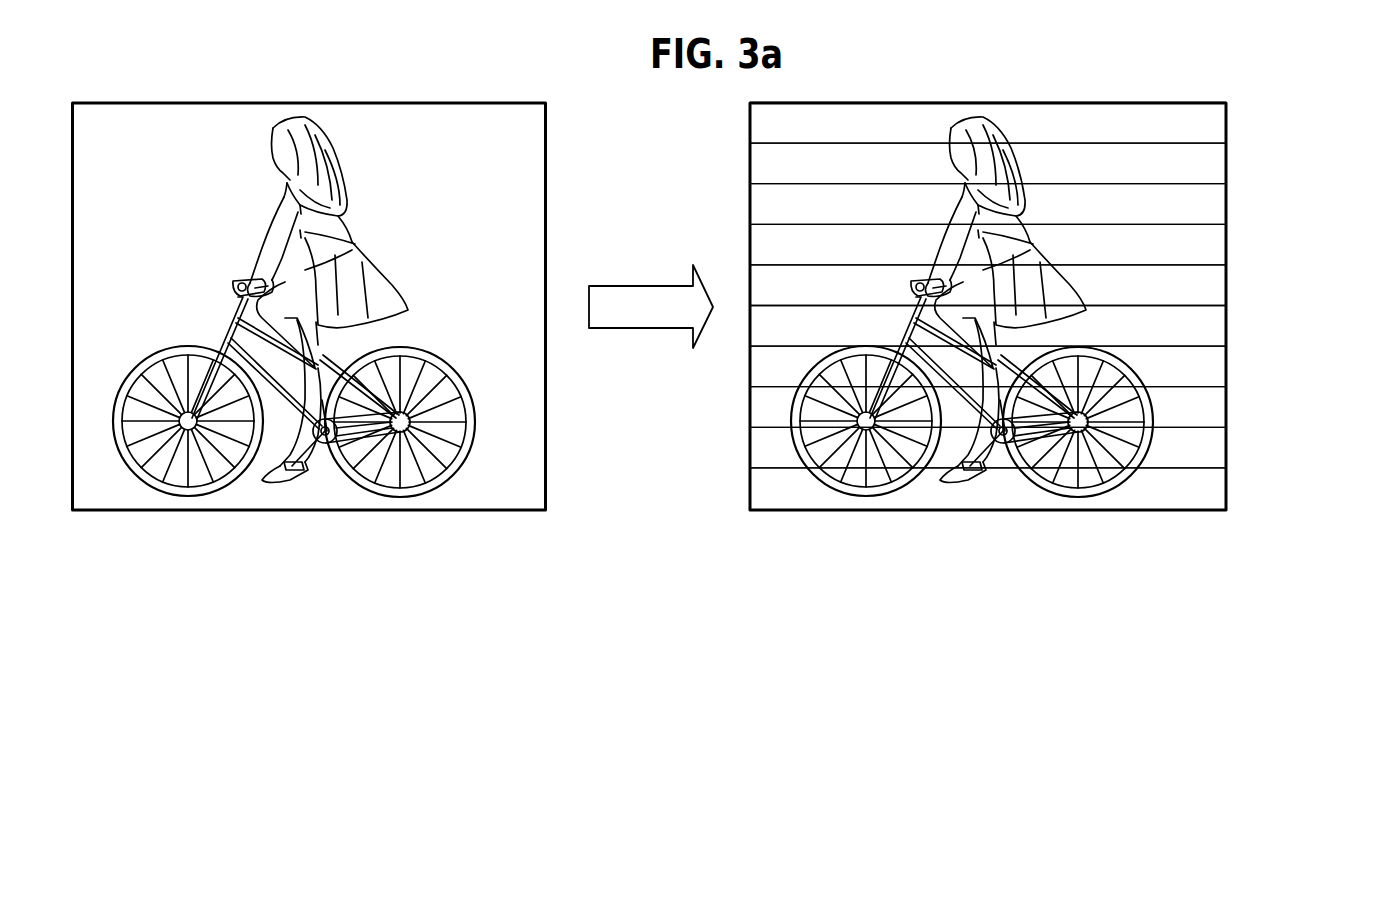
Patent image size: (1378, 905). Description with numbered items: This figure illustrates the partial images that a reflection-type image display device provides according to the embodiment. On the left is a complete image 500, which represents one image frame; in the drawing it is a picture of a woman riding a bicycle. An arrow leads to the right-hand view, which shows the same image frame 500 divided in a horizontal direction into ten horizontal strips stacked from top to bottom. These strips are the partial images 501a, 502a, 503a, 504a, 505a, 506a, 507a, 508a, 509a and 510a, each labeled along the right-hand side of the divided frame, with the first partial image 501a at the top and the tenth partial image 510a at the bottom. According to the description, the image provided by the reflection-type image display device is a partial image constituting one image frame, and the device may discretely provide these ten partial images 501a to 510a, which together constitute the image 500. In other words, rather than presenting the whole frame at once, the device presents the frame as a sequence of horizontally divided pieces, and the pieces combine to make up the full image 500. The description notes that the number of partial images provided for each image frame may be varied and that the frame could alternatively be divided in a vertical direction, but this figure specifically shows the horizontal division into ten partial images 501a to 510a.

The image 500 is at (547, 185).
The partial image 501a is at (1228, 118).
The partial image 502a is at (1228, 159).
The partial image 503a is at (1228, 200).
The partial image 504a is at (1228, 241).
The partial image 505a is at (1228, 282).
The partial image 506a is at (1228, 323).
The partial image 507a is at (1228, 364).
The partial image 508a is at (1228, 405).
The partial image 509a is at (1228, 446).
The partial image 510a is at (1228, 487).